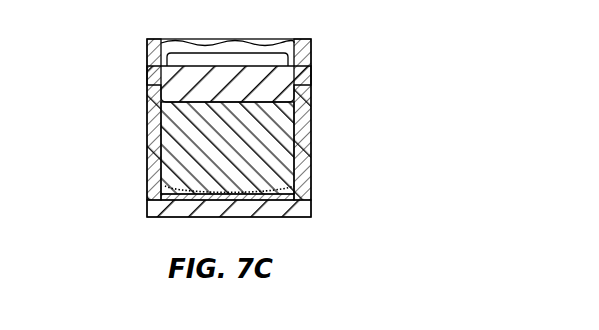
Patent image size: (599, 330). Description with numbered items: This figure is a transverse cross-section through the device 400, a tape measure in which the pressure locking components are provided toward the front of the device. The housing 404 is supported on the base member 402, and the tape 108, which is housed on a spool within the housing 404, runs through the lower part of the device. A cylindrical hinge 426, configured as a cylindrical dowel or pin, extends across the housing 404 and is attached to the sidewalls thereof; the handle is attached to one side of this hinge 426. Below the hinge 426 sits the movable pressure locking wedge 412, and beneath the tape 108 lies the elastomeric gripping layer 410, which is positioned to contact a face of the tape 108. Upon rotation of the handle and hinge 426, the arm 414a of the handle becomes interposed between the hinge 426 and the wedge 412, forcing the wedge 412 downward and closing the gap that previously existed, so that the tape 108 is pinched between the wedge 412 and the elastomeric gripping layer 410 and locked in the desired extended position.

The device 400 is at (362, 81).
The housing 404 is at (148, 112).
The hinge 426 is at (256, 66).
The movable pressure locking wedge 412 is at (247, 157).
The arm 414a is at (212, 106).
The tape 108 is at (272, 189).
The elastomeric gripping layer 410 is at (178, 199).
The base member 402 is at (288, 212).